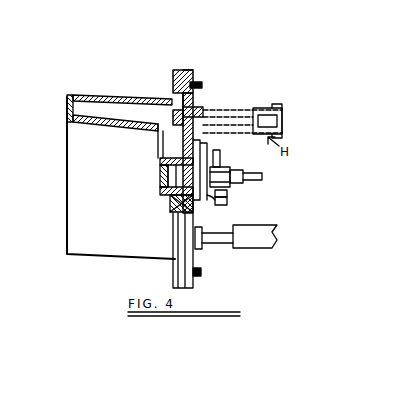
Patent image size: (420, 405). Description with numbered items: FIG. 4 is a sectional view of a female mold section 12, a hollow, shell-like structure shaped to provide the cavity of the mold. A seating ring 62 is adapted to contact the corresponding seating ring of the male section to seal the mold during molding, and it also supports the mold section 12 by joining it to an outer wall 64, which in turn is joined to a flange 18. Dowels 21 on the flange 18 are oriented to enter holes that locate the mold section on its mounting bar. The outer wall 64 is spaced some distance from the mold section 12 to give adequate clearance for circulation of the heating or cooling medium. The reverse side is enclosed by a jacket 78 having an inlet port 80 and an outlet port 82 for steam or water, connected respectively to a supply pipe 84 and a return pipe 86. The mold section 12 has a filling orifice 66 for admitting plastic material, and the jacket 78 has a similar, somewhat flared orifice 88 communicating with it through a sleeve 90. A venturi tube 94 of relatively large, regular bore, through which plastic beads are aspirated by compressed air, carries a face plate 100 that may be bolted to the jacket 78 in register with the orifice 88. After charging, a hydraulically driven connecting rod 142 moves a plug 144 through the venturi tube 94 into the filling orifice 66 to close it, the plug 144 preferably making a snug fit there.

The female mold section 12 is at (70, 138).
The flange 18 is at (172, 78).
The dowels 21 is at (202, 86).
The seating ring 62 is at (67, 108).
The outer wall 64 is at (124, 96).
The filling orifice 66 is at (160, 160).
The jacket 78 is at (188, 70).
The inlet port 80 is at (182, 122).
The outlet port 82 is at (180, 238).
The supply pipe 84 is at (264, 108).
The return pipe 86 is at (252, 230).
The orifice 88 is at (172, 206).
The sleeve 90 is at (160, 152).
The venturi tube 94 is at (236, 168).
The face plate 100 is at (216, 198).
The connecting rod 142 is at (256, 170).
The plug 144 is at (160, 172).